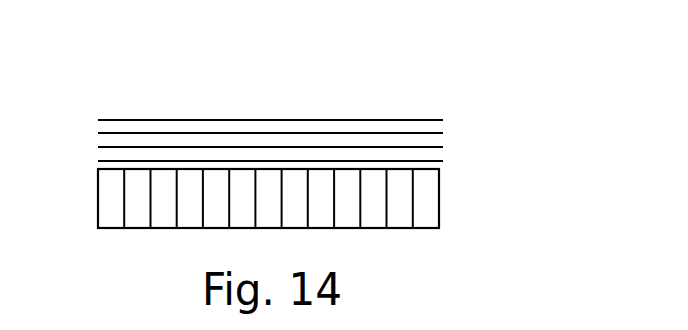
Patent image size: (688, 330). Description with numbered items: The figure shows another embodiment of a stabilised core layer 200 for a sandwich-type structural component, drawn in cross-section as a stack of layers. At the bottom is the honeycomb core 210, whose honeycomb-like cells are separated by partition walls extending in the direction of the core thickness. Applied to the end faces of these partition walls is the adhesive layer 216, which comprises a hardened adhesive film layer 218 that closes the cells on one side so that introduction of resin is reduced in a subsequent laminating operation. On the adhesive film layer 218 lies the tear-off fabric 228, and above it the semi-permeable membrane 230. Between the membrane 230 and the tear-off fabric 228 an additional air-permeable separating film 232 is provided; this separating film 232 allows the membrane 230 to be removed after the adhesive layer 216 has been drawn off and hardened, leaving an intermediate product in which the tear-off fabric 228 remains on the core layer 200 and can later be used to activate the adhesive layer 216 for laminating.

The stabilised core layer 200 is at (341, 208).
The honeycomb core 210 is at (450, 220).
The adhesive layer 216 is at (305, 97).
The adhesive film layer 218 is at (261, 163).
The tear-off fabric 228 is at (173, 146).
The semi-permeable membrane 230 is at (220, 120).
The air-permeable separating film 232 is at (113, 133).